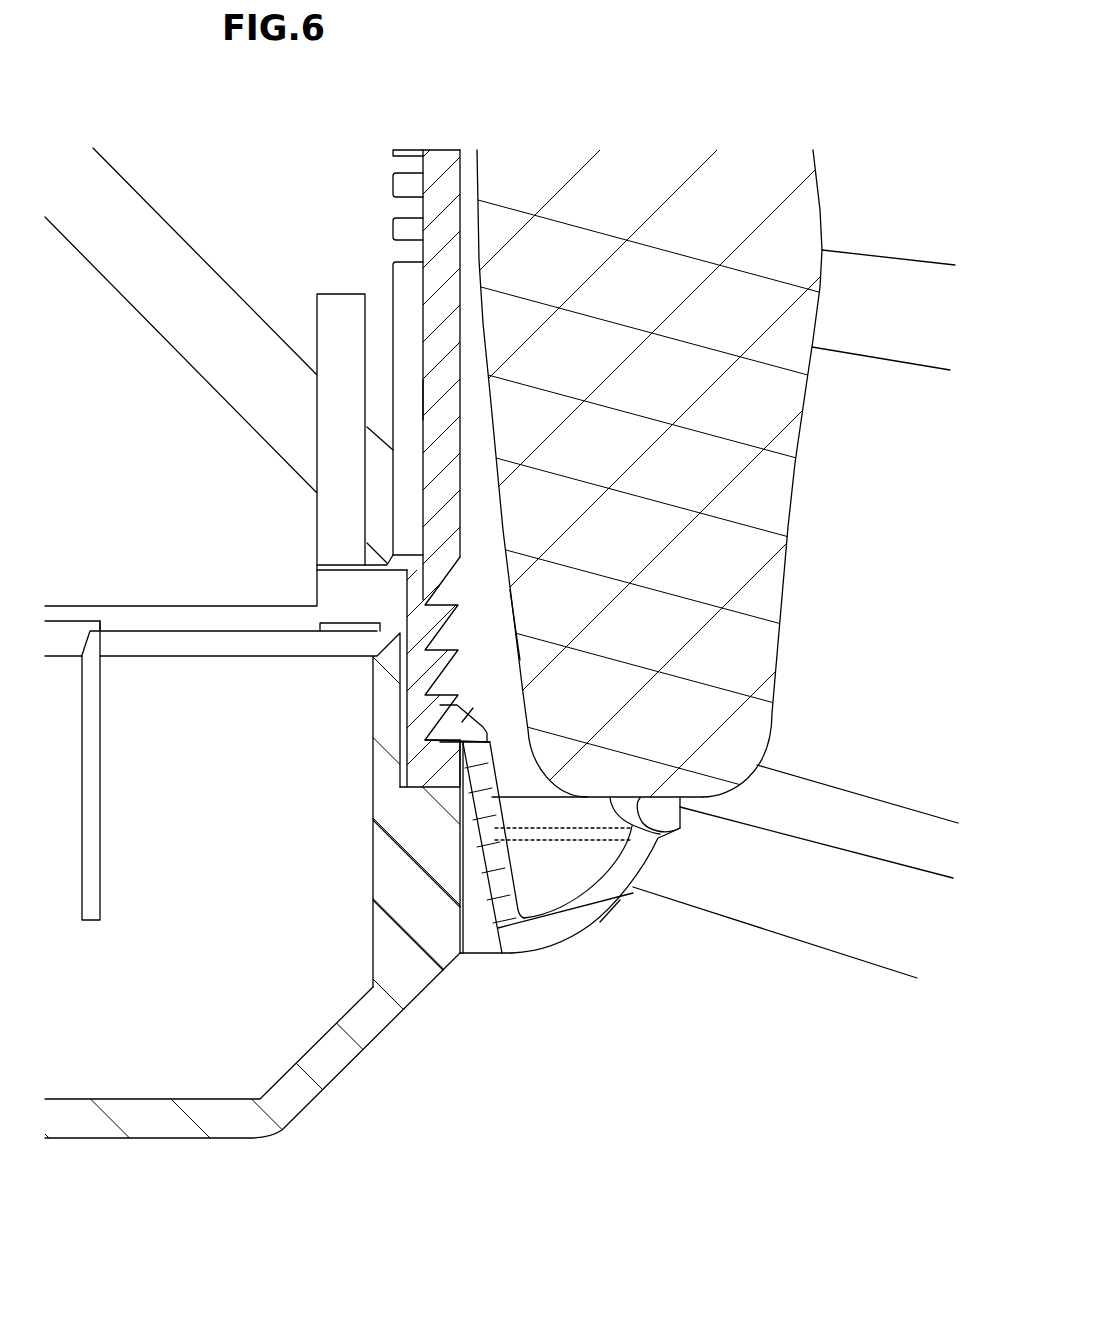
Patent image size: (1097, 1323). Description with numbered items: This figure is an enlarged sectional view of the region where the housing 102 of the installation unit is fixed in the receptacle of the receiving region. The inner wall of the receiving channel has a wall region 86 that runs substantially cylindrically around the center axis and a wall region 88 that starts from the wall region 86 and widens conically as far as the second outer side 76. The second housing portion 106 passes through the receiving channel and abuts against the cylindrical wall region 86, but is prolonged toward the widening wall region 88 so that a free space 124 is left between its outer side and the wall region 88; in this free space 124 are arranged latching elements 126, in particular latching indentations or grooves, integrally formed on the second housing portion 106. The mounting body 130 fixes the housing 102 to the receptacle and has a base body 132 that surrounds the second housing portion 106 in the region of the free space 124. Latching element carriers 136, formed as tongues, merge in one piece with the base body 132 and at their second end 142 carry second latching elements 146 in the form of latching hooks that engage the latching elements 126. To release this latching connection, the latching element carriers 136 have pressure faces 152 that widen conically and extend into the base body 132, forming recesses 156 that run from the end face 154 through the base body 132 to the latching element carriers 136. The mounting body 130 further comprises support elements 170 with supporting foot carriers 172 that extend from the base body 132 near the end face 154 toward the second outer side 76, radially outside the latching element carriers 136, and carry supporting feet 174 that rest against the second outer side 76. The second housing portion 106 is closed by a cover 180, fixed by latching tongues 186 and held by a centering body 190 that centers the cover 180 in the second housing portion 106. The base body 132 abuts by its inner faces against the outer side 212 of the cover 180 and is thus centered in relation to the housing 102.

The second outer side 76 is at (548, 870).
The wall region 86 is at (472, 187).
The wall region 88 is at (503, 514).
The housing 102 is at (440, 404).
The second housing portion 106 is at (443, 327).
The free space 124 is at (508, 598).
The latching elements 126 is at (450, 631).
The mounting body 130 is at (583, 853).
The base body 132 is at (512, 953).
The latching element carriers 136 is at (493, 840).
The second end 142 is at (470, 712).
The second latching elements 146 is at (462, 722).
The pressure faces 152 is at (450, 898).
The end face 154 is at (535, 955).
The recesses 156 is at (457, 915).
The support elements 170 is at (607, 920).
The supporting foot carriers 172 is at (607, 883).
The supporting feet 174 is at (678, 814).
The cover 180 is at (238, 1125).
The latching tongues 186 is at (67, 687).
The centering body 190 is at (390, 712).
The outer side 212 is at (460, 872).